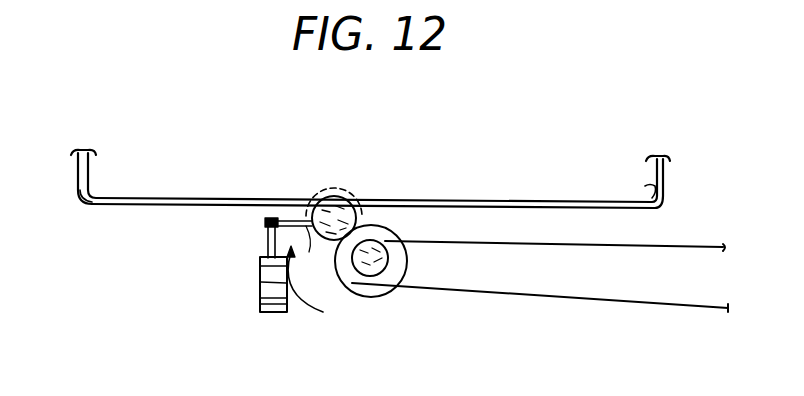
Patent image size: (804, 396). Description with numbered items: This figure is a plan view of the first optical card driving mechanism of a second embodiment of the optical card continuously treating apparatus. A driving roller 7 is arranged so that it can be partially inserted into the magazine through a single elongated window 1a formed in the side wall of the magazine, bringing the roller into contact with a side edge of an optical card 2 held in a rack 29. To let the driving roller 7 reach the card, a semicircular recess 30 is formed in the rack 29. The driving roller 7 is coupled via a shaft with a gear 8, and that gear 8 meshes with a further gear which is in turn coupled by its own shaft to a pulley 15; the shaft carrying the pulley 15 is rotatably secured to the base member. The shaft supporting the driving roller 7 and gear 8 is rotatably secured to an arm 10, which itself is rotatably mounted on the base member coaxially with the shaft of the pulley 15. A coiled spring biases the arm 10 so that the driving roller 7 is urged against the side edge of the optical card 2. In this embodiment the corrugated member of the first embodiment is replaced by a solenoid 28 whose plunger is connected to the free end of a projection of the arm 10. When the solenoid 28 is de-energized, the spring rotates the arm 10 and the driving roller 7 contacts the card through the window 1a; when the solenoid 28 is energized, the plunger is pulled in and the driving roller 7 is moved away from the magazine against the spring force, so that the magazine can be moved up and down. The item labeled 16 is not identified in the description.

The optical card 2 is at (664, 186).
The rack 29 is at (88, 206).
The driving roller 7 is at (332, 200).
The semicircular recess 30 is at (342, 190).
The gear 8 is at (348, 293).
The pulley 15 is at (387, 294).
The sheet / paper 16 is at (648, 309).
The arm 10 is at (268, 240).
The solenoid 28 is at (260, 292).
The window 1a is at (310, 279).